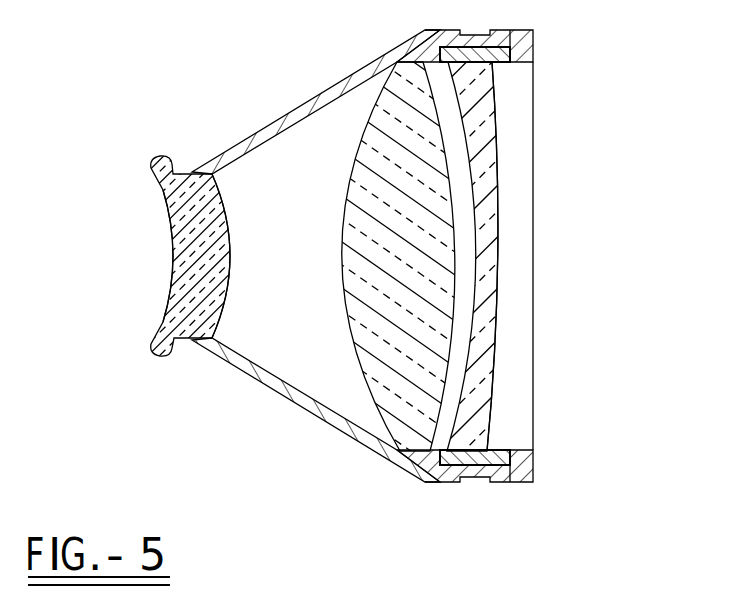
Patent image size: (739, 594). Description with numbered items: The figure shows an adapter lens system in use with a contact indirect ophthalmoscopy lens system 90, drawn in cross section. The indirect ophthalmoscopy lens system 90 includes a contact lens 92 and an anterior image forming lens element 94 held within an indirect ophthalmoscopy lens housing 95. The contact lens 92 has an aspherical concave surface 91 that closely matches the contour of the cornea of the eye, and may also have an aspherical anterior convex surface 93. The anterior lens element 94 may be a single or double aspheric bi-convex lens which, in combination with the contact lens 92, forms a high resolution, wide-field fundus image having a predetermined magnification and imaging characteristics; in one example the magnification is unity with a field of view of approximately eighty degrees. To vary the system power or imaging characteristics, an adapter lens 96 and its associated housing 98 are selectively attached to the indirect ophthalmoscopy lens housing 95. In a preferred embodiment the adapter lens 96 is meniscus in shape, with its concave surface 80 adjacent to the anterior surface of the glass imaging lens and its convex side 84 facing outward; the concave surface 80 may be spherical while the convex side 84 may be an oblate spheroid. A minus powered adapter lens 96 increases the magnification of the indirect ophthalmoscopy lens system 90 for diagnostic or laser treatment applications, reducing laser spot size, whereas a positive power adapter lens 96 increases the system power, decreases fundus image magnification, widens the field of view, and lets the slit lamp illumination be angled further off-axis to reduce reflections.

The concave surface 80 is at (458, 397).
The convex side 84 is at (500, 362).
The indirect ophthalmoscopy lens system 90 is at (357, 291).
The aspherical concave surface 91 is at (166, 205).
The contact lens 92 is at (175, 235).
The aspherical anterior convex surface 93 is at (236, 267).
The anterior image forming lens element 94 is at (345, 189).
The indirect ophthalmoscopy lens housing 95 is at (322, 95).
The adapter lens 96 is at (547, 286).
The housing 98 is at (533, 462).